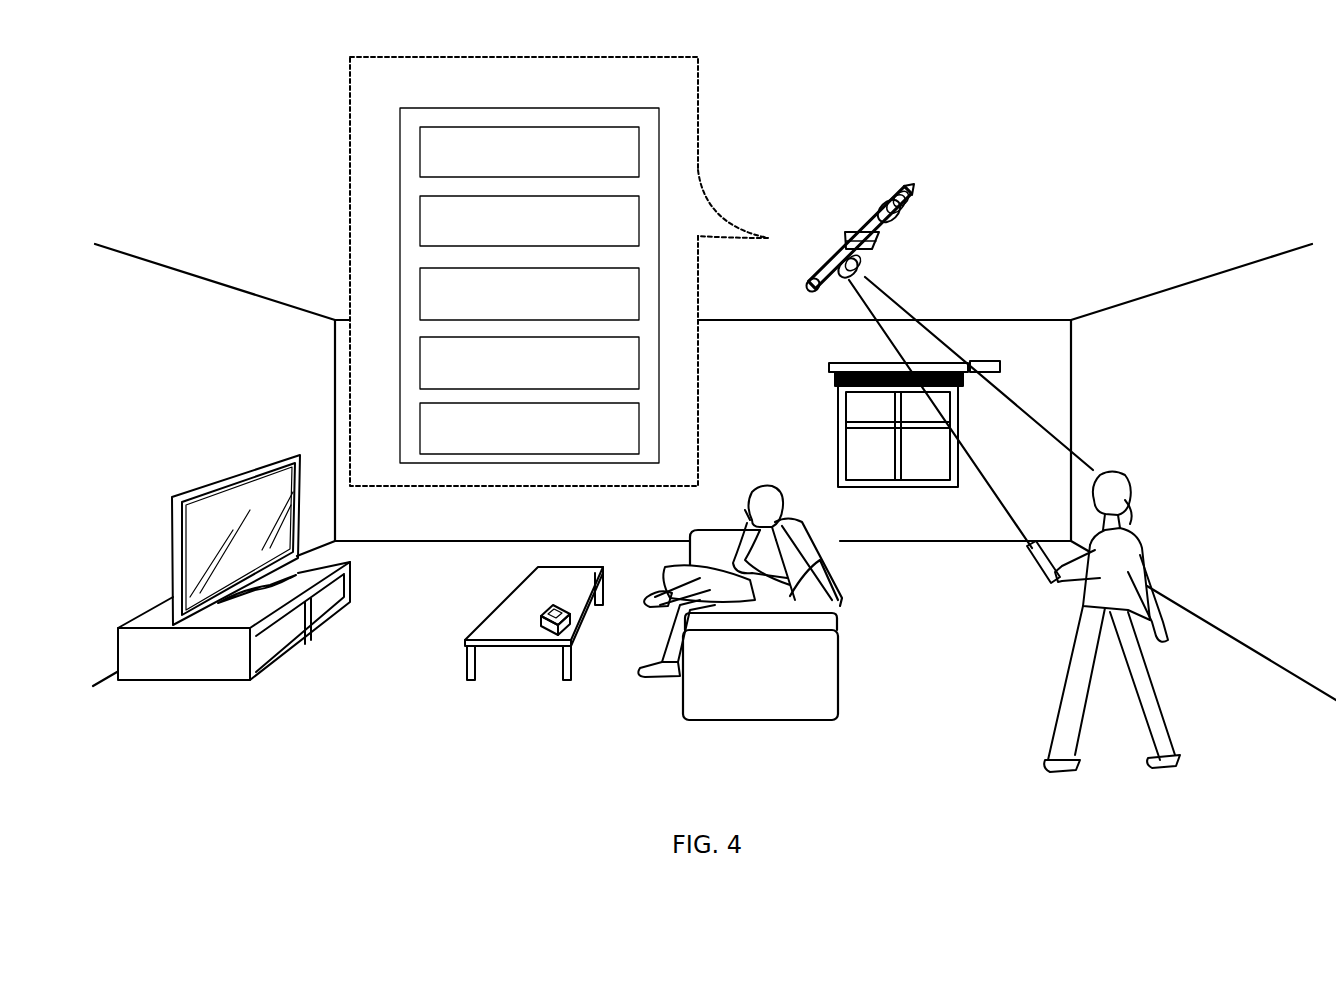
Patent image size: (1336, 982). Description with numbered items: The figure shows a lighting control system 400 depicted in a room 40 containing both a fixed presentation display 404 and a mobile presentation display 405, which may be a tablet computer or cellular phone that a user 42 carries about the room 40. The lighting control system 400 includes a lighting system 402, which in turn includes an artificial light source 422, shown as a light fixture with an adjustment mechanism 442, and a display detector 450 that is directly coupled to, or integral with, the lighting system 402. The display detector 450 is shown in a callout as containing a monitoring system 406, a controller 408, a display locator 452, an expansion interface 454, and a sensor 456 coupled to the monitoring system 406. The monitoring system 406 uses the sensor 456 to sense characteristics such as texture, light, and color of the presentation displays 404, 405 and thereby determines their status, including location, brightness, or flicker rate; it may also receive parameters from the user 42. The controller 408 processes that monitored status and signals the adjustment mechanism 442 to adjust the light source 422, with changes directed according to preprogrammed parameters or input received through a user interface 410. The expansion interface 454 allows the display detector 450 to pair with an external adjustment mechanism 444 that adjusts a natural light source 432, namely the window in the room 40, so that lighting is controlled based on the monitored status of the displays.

The lighting control system 400 is at (714, 388).
The lighting system 402 is at (1279, 240).
The fixed presentation display 404 is at (283, 503).
The mobile presentation display 405 is at (1037, 565).
The monitoring system 406 is at (529, 152).
The controller 408 is at (529, 221).
The user interface 410 is at (573, 627).
The artificial light source 422 is at (866, 222).
The natural light source 432 is at (838, 458).
The adjustment mechanism 442 is at (893, 190).
The external adjustment mechanism 444 is at (1002, 368).
The display detector 450 is at (721, 302).
The display locator 452 is at (529, 294).
The expansion interface 454 is at (529, 363).
The sensor 456 is at (529, 428).
The room 40 is at (322, 749).
The user 42 is at (1059, 641).